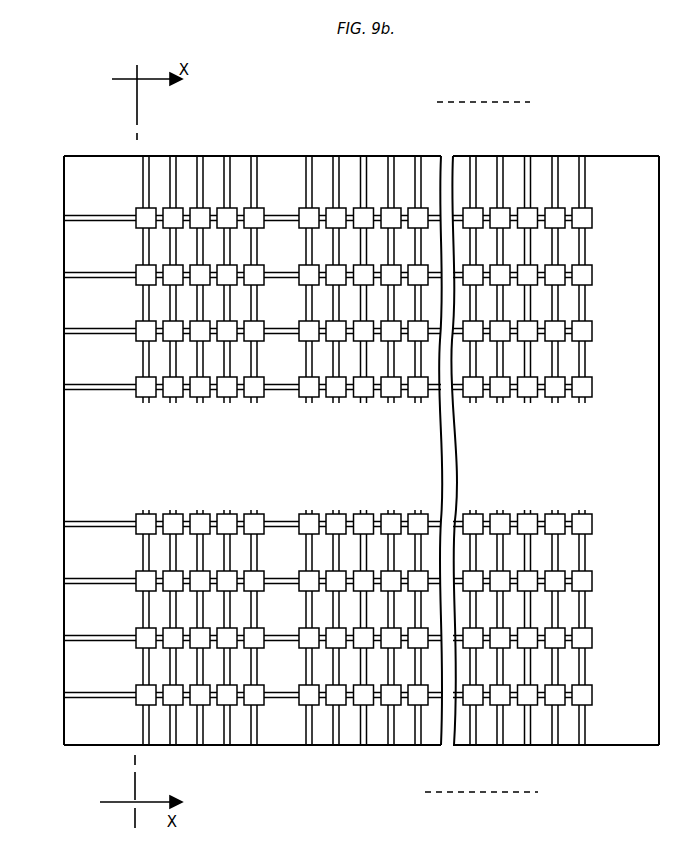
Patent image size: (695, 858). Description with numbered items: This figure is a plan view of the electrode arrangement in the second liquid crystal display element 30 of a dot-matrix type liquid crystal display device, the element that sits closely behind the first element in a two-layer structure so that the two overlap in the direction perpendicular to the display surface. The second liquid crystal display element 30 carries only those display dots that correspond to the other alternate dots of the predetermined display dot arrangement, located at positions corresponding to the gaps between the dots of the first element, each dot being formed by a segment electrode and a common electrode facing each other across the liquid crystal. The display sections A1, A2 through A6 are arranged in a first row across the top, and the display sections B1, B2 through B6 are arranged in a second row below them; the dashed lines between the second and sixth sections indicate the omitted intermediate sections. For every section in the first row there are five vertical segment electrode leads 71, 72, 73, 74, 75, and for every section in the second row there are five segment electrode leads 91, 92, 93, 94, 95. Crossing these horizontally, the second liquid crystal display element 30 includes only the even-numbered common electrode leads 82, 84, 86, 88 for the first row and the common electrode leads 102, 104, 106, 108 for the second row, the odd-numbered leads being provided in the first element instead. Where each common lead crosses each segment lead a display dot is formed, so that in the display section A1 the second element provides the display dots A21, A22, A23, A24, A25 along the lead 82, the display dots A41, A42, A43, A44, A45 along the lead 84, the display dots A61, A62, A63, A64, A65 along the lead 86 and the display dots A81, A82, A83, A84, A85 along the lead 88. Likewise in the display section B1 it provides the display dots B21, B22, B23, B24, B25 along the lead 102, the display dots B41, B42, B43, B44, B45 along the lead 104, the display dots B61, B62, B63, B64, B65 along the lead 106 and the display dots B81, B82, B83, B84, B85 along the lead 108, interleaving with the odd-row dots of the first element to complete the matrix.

The second liquid crystal display element 30 is at (620, 177).
The segment electrode lead 71 is at (138, 157).
The segment electrode lead 72 is at (163, 157).
The segment electrode lead 73 is at (208, 157).
The segment electrode lead 74 is at (242, 157).
The segment electrode lead 75 is at (270, 157).
The common electrode lead 82 is at (78, 215).
The common electrode lead 84 is at (78, 272).
The common electrode lead 86 is at (78, 328).
The common electrode lead 88 is at (78, 384).
The segment electrode lead 91 is at (140, 735).
The segment electrode lead 92 is at (167, 730).
The segment electrode lead 93 is at (195, 730).
The segment electrode lead 94 is at (222, 733).
The segment electrode lead 95 is at (243, 733).
The common electrode lead 102 is at (80, 521).
The common electrode lead 104 is at (78, 578).
The common electrode lead 106 is at (78, 635).
The common electrode lead 108 is at (78, 692).
The display section A1 is at (194, 260).
The display section A2 is at (375, 170).
The display section A6 is at (508, 168).
The display section B1 is at (194, 627).
The display section B2 is at (375, 730).
The display section B6 is at (513, 729).
The display dot A21 is at (140, 208).
The display dot A22 is at (168, 206).
The display dot A23 is at (197, 207).
The display dot A24 is at (224, 207).
The display dot A25 is at (258, 207).
The display dot A41 is at (137, 268).
The display dot A42 is at (168, 270).
The display dot A43 is at (192, 280).
The display dot A44 is at (228, 270).
The display dot A45 is at (250, 273).
The display dot A61 is at (137, 324).
The display dot A62 is at (168, 334).
The display dot A63 is at (193, 339).
The display dot A64 is at (226, 328).
The display dot A65 is at (257, 338).
The display dot A81 is at (137, 396).
The display dot A82 is at (168, 398).
The display dot A83 is at (197, 398).
The display dot A84 is at (230, 398).
The display dot A85 is at (258, 398).
The display dot B21 is at (140, 512).
The display dot B22 is at (170, 512).
The display dot B23 is at (200, 512).
The display dot B24 is at (228, 512).
The display dot B25 is at (258, 512).
The display dot B41 is at (137, 574).
The display dot B42 is at (168, 576).
The display dot B43 is at (192, 586).
The display dot B44 is at (228, 576).
The display dot B45 is at (252, 576).
The display dot B61 is at (140, 642).
The display dot B62 is at (168, 637).
The display dot B63 is at (193, 644).
The display dot B64 is at (228, 634).
The display dot B65 is at (254, 636).
The display dot B81 is at (140, 700).
The display dot B82 is at (168, 702).
The display dot B83 is at (200, 692).
The display dot B84 is at (230, 694).
The display dot B85 is at (257, 702).